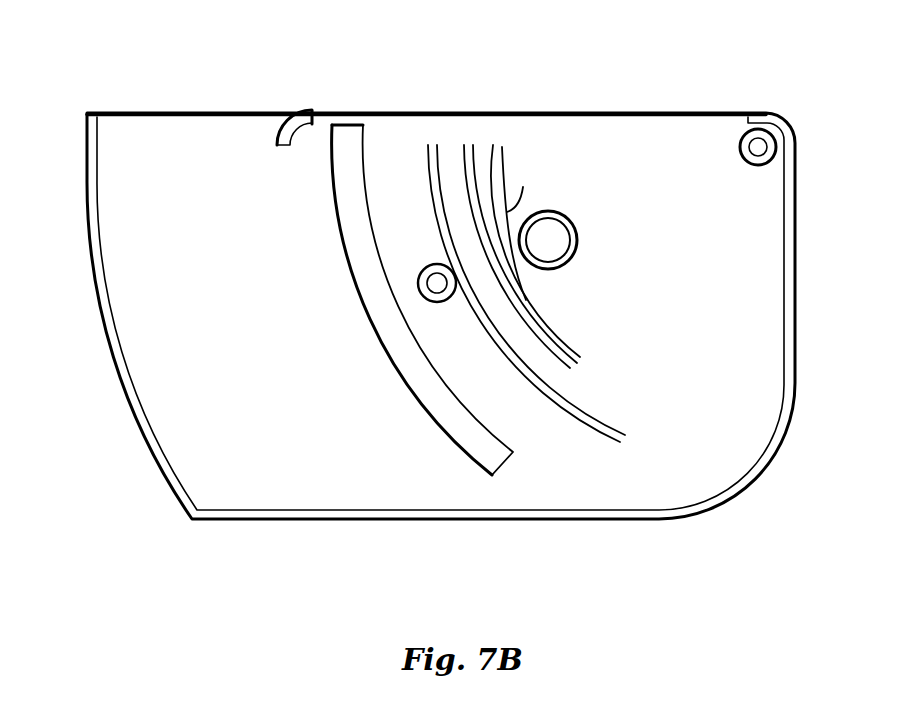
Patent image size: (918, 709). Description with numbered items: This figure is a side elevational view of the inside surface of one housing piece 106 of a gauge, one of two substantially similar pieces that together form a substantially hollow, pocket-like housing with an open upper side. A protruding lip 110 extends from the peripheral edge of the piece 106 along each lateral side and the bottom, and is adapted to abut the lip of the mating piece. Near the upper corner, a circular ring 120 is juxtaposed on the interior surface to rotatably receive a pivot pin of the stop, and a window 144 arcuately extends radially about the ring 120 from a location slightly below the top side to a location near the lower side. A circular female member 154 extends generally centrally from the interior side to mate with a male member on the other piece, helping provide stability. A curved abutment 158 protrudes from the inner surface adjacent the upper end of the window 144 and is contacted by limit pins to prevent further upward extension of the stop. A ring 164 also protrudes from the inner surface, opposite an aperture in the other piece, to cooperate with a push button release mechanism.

The housing piece 106 is at (712, 310).
The protruding lip 110 is at (797, 290).
The circular ring 120 is at (741, 137).
The window 144 is at (347, 157).
The circular female member 154 is at (428, 265).
The curved abutment 158 is at (283, 123).
The ring 164 is at (548, 211).